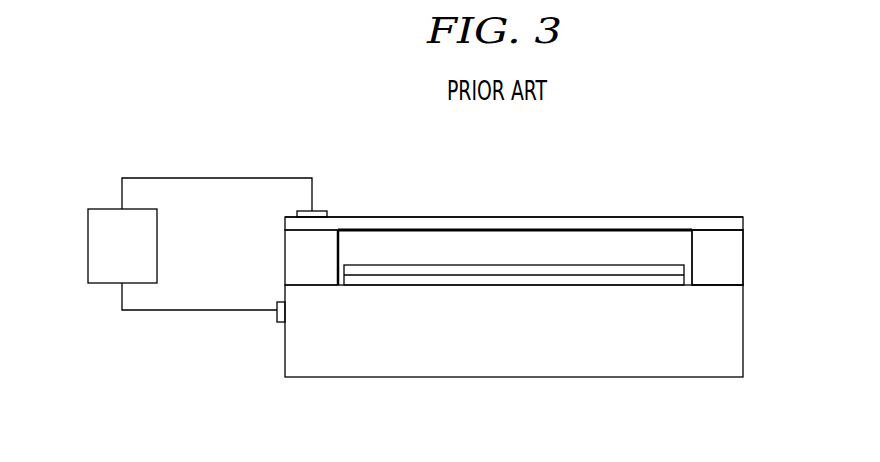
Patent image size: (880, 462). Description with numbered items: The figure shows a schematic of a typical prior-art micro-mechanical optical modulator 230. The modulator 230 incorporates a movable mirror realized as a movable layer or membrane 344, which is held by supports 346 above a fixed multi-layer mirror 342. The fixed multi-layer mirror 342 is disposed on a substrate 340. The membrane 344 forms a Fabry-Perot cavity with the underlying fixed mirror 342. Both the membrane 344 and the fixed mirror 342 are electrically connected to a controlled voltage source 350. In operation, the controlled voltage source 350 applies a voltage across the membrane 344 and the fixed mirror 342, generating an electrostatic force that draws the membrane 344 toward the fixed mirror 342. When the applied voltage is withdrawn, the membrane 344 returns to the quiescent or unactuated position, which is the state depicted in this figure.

The modulator 230 is at (734, 184).
The substrate 340 is at (388, 377).
The fixed multi-layer mirror 342 is at (641, 295).
The membrane 344 is at (405, 217).
The supports 346 is at (732, 263).
The controlled voltage source 350 is at (88, 246).